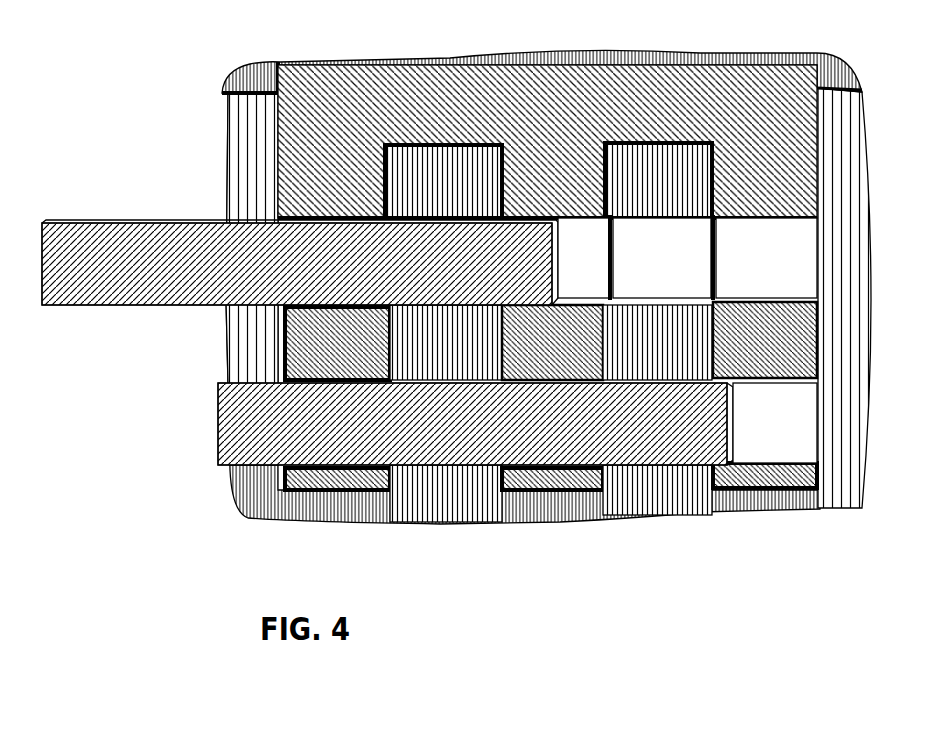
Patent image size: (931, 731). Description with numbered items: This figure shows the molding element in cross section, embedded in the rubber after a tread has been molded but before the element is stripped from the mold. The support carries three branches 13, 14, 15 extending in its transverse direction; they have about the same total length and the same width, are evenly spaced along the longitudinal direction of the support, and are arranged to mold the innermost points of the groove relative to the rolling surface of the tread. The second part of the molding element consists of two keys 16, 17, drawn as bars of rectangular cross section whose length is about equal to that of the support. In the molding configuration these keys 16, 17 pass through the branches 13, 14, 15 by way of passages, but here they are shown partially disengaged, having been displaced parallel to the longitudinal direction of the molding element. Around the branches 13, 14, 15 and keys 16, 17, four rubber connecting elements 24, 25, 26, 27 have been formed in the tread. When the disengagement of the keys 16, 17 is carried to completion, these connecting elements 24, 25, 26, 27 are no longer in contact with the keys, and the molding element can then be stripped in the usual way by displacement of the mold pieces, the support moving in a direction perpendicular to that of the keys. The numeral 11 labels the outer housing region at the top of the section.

The housing 11 is at (263, 83).
The branch 13 is at (335, 353).
The branch 14 is at (540, 492).
The branch 15 is at (785, 477).
The key 16 is at (230, 468).
The key 17 is at (180, 287).
The connecting element 24 is at (440, 163).
The connecting element 25 is at (658, 170).
The connecting element 26 is at (443, 353).
The connecting element 27 is at (665, 345).